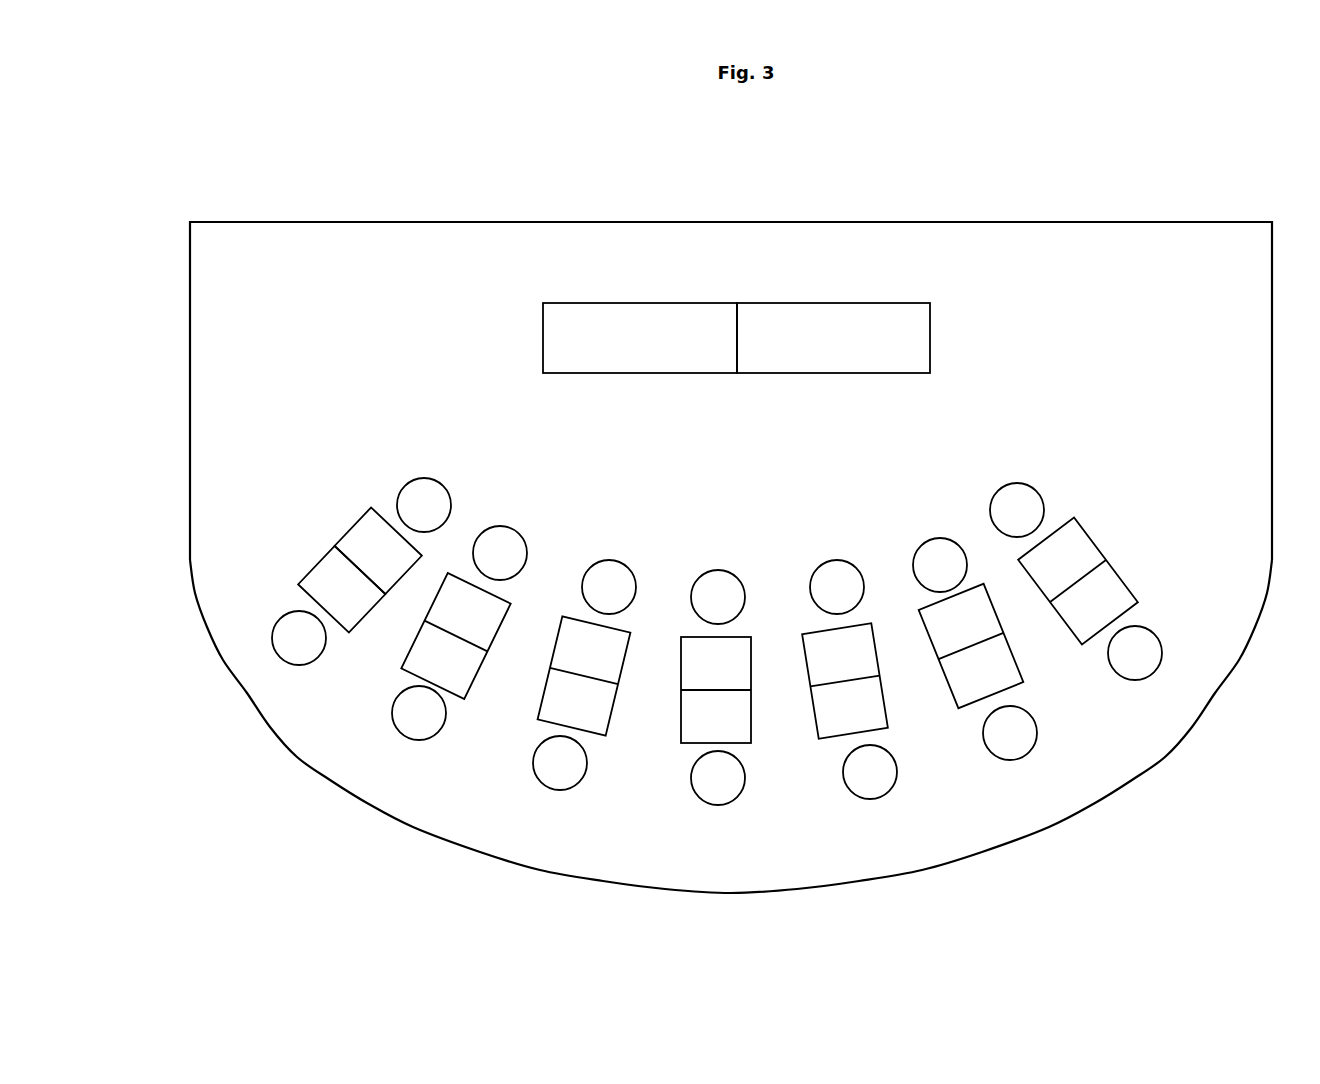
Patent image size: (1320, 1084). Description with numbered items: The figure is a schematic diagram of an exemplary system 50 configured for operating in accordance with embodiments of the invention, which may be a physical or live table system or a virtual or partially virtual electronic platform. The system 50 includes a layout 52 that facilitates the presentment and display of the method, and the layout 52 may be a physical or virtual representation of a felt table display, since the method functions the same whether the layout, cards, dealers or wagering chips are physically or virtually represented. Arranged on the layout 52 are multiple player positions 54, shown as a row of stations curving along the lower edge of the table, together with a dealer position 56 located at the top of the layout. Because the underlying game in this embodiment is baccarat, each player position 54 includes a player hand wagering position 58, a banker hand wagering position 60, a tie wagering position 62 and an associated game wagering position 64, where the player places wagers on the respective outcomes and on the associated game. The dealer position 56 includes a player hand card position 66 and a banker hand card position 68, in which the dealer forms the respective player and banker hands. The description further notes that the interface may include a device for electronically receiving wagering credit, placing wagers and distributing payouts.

The system 50 is at (550, 173).
The layout 52 is at (343, 260).
The player position 54 is at (269, 611).
The dealer position 56 is at (752, 242).
The player hand wagering position 58 is at (353, 587).
The banker hand wagering position 60 is at (392, 565).
The tie wagering position 62 is at (309, 642).
The associated game wagering position 64 is at (412, 492).
The player hand card position 66 is at (663, 325).
The banker hand card position 68 is at (808, 325).